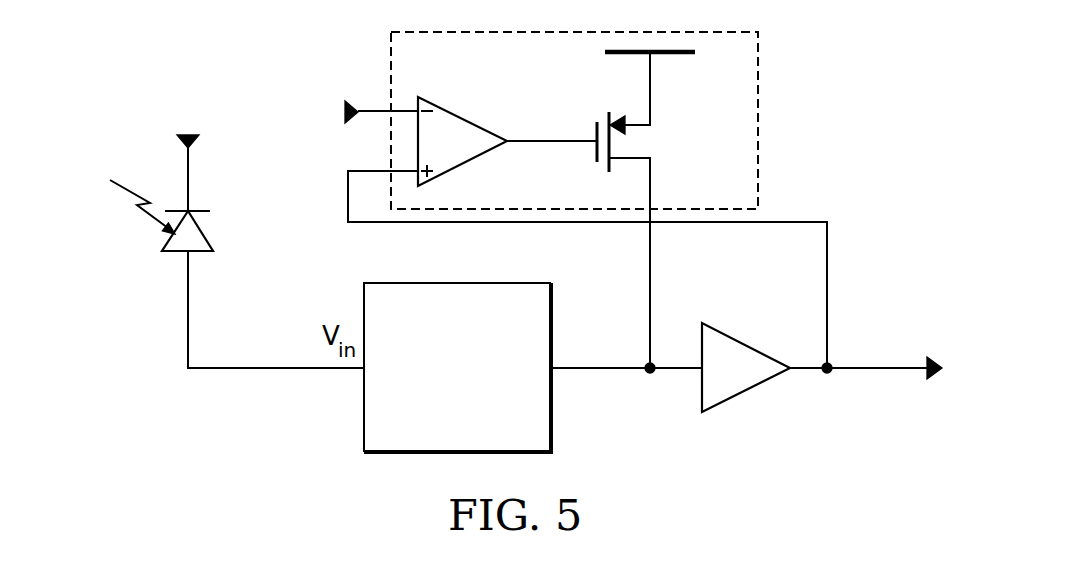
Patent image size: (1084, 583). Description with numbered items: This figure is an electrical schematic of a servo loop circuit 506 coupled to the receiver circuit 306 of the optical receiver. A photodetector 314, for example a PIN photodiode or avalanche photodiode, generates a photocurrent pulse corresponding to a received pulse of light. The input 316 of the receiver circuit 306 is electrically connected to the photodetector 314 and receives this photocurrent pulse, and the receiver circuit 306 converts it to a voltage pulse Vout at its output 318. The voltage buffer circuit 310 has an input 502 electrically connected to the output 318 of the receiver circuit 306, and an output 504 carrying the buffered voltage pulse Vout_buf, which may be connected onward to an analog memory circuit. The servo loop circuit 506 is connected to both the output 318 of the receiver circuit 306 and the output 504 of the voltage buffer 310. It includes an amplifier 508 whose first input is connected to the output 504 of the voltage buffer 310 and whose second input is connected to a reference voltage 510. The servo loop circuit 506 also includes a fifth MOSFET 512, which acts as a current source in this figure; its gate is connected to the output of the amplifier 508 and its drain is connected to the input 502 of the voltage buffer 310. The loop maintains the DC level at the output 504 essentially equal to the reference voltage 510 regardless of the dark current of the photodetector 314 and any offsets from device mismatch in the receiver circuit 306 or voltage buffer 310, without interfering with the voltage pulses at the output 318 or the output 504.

The receiver circuit 306 is at (457, 283).
The voltage buffer circuit 310 is at (730, 400).
The photodetector 314 is at (166, 255).
The input 316 is at (362, 370).
The output 318 is at (556, 370).
The input 502 is at (697, 371).
The output 504 is at (795, 370).
The servo loop circuit 506 is at (758, 113).
The amplifier 508 is at (433, 102).
The reference voltage 510 is at (352, 100).
The fifth MOSFET 512 is at (610, 113).